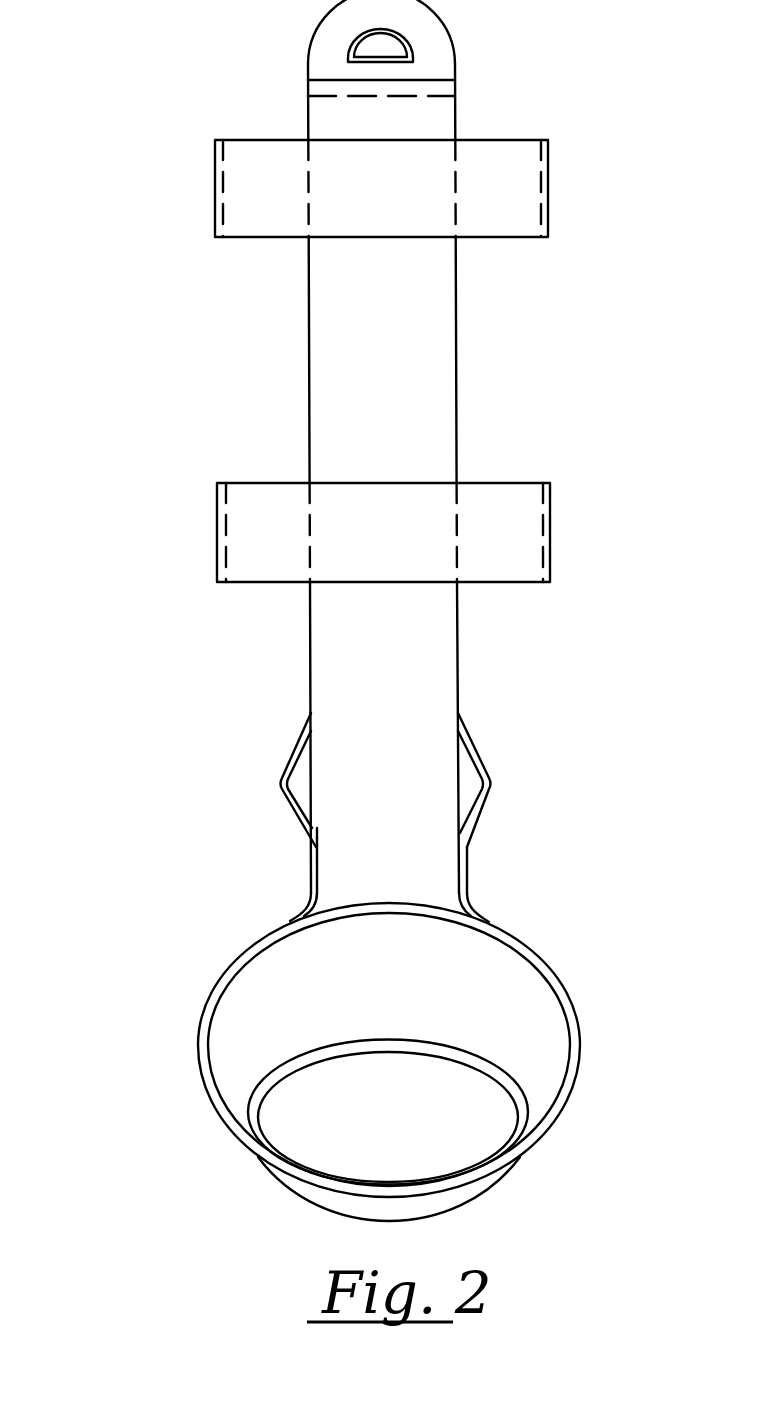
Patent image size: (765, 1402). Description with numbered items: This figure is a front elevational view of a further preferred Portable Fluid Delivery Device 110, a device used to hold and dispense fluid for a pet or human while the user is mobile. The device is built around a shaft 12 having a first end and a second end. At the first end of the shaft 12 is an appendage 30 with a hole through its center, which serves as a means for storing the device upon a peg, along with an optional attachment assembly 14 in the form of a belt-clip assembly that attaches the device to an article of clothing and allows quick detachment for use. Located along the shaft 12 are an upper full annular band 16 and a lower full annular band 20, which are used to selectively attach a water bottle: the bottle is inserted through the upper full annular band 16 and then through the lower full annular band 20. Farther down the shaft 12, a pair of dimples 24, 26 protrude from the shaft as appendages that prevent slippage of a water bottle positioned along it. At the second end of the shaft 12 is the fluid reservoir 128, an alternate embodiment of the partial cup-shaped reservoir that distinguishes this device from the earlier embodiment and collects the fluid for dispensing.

The Portable Fluid Delivery Device 110 is at (183, 388).
The shaft 12 is at (452, 360).
The appendage 30 is at (318, 62).
The attachment assembly 14 is at (452, 85).
The upper full annular band 16 is at (215, 206).
The lower full annular band 20 is at (217, 538).
The dimple 24 is at (299, 783).
The dimple 26 is at (477, 781).
The fluid reservoir 128 is at (545, 1070).